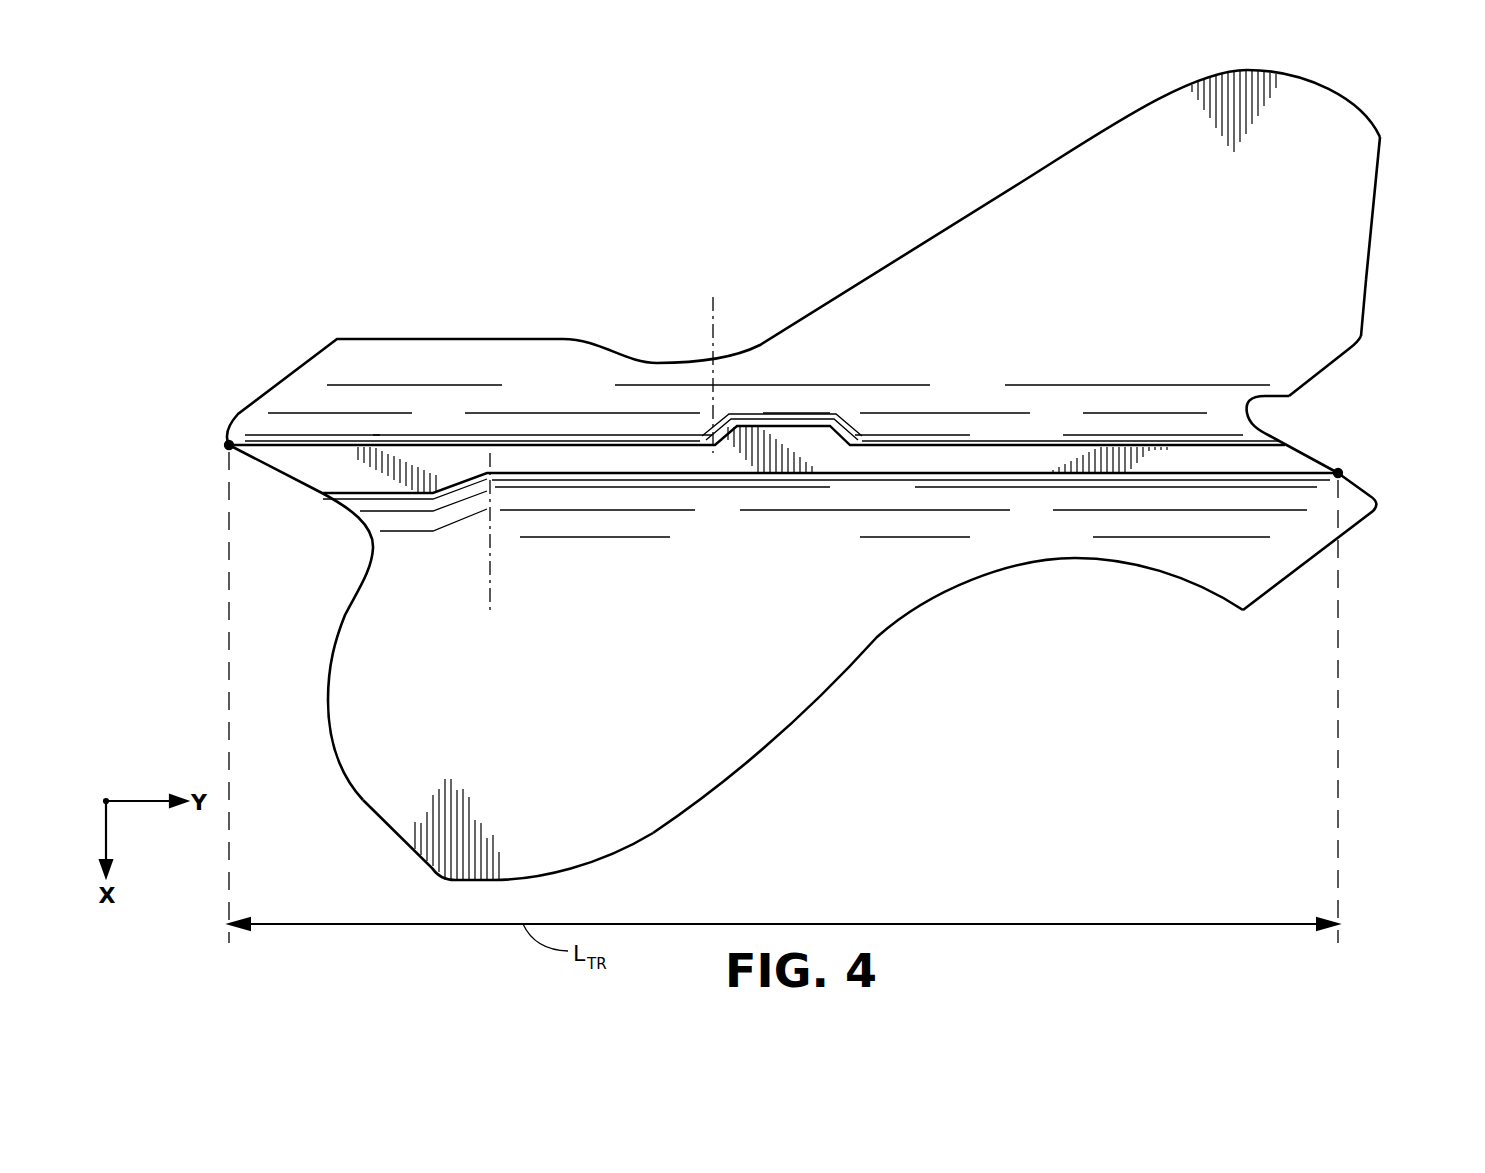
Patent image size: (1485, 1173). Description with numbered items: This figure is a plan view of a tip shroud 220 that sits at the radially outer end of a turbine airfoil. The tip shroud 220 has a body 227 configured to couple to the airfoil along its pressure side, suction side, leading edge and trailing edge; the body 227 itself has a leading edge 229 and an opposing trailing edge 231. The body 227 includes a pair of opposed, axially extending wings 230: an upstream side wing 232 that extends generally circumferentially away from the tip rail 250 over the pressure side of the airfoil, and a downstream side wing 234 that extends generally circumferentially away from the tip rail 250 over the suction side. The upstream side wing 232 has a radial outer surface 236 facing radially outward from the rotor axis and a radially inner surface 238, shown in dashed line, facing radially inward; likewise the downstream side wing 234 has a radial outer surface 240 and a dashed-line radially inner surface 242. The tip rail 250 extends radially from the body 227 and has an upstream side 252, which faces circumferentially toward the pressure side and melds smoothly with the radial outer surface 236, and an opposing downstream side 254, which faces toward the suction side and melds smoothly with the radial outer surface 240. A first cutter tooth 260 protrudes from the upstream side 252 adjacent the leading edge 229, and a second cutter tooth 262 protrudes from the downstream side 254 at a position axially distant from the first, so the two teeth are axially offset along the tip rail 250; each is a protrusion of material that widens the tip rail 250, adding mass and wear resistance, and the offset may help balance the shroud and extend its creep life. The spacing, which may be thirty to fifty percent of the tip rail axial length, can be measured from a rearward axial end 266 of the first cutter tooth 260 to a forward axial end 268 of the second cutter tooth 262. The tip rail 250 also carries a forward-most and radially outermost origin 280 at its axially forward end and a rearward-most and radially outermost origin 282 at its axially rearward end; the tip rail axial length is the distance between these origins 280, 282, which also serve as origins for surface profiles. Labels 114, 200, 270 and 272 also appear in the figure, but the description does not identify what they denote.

The airfoil 114 is at (629, 829).
The trailing edge section 200 is at (753, 780).
The tip shroud 220 is at (1390, 146).
The body 227 is at (913, 255).
The leading edge 229 is at (318, 705).
The wings 230 is at (1136, 375).
The trailing edge 231 is at (1356, 346).
The upstream side wing 232 is at (860, 608).
The downstream side wing 234 is at (1150, 142).
The radial outer surface 236 is at (647, 813).
The radially inner surface 238 is at (363, 800).
The radial outer surface 240 is at (1335, 297).
The radially inner surface 242 is at (1313, 263).
The tip rail 250 is at (545, 455).
The upstream side 252 is at (535, 475).
The downstream side 254 is at (465, 446).
The first cutter tooth 260 is at (387, 483).
The second cutter tooth 262 is at (782, 440).
The rearward axial end 266 is at (490, 585).
The forward axial end 268 is at (713, 323).
The forward region 270 is at (327, 620).
The aft region 272 is at (1284, 413).
The forward-most and radially outermost origin 280 is at (229, 445).
The rearward-most and radially outermost origin 282 is at (1338, 473).